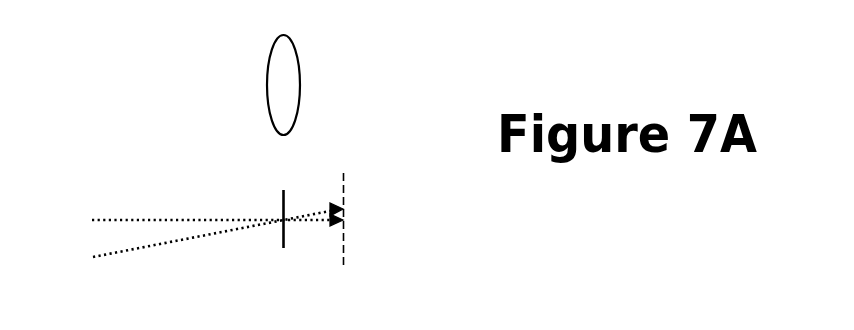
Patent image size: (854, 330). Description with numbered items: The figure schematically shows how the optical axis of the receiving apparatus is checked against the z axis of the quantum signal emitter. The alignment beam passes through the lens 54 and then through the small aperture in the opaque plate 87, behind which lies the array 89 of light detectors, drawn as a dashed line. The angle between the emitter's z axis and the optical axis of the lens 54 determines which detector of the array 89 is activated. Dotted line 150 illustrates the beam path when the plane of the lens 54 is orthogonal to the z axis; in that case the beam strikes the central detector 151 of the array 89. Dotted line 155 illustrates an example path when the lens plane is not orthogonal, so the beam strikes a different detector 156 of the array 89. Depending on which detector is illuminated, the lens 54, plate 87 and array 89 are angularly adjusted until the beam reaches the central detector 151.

The lens 54 is at (272, 63).
The opaque plate 87 is at (282, 208).
The array of light detectors 89 is at (360, 267).
The dotted line 150 is at (100, 220).
The central detector 151 is at (344, 220).
The dotted line 155 is at (108, 256).
The second ray focal point 156 is at (344, 209).